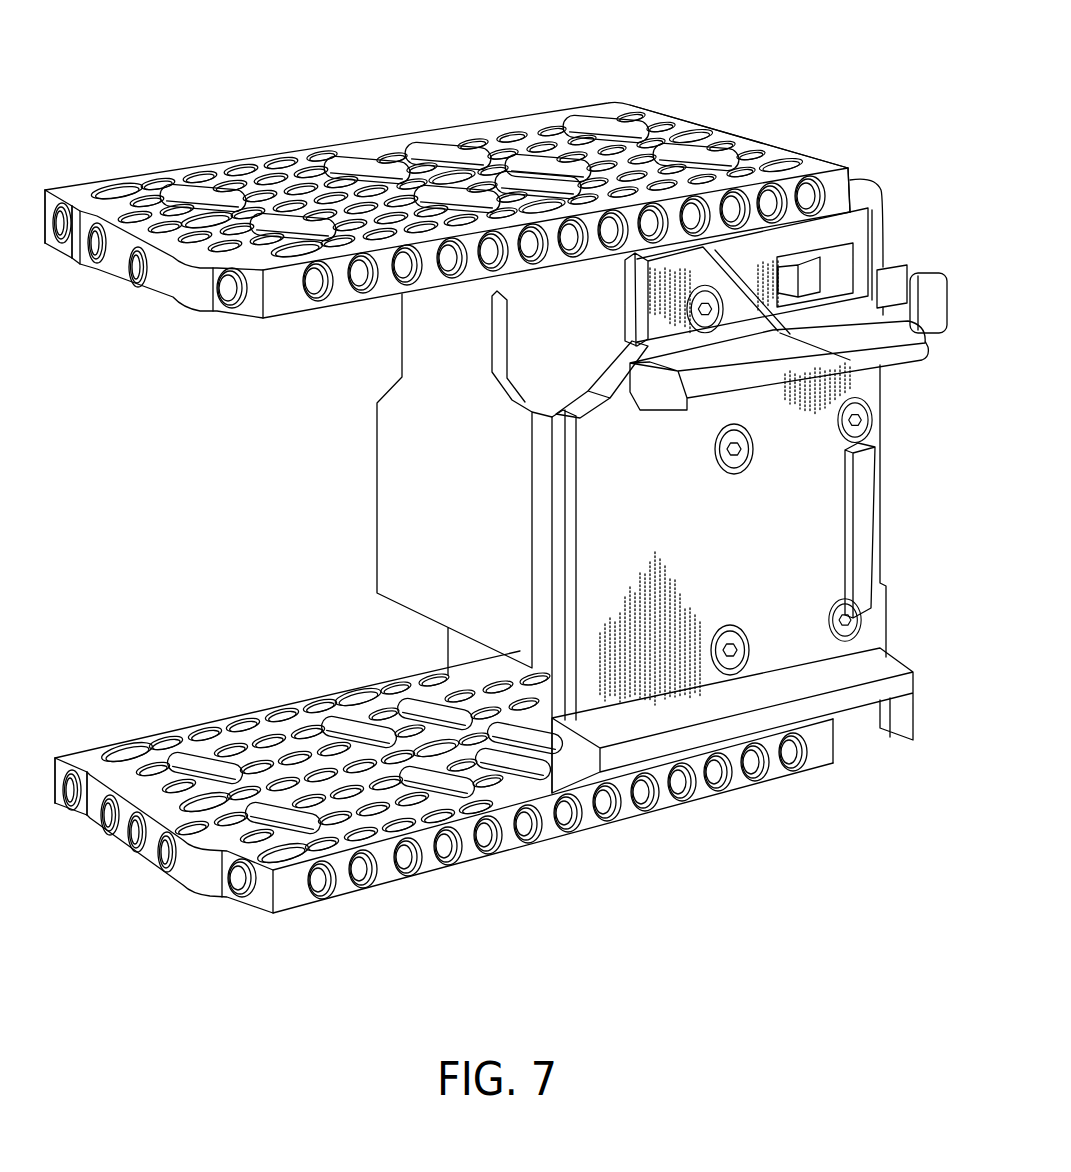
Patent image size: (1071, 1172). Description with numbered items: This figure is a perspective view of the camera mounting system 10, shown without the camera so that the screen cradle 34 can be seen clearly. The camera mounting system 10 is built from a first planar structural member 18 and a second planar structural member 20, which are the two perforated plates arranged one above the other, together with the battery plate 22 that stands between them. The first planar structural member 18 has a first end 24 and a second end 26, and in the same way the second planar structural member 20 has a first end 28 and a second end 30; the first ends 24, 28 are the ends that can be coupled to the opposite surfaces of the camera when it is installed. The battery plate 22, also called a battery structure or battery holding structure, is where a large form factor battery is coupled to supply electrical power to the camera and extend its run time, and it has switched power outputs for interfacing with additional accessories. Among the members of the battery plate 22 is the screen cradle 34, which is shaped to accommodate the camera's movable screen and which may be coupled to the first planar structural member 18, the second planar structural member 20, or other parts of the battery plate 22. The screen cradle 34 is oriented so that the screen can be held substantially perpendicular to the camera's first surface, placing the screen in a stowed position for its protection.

The camera mounting system 10 is at (760, 86).
The first planar structural member 18 is at (513, 853).
The second planar structural member 20 is at (418, 130).
The battery plate 22 is at (893, 452).
The first end 24 is at (268, 932).
The second end 26 is at (808, 792).
The first end 28 is at (190, 322).
The second end 30 is at (845, 133).
The screen cradle 34 is at (740, 557).